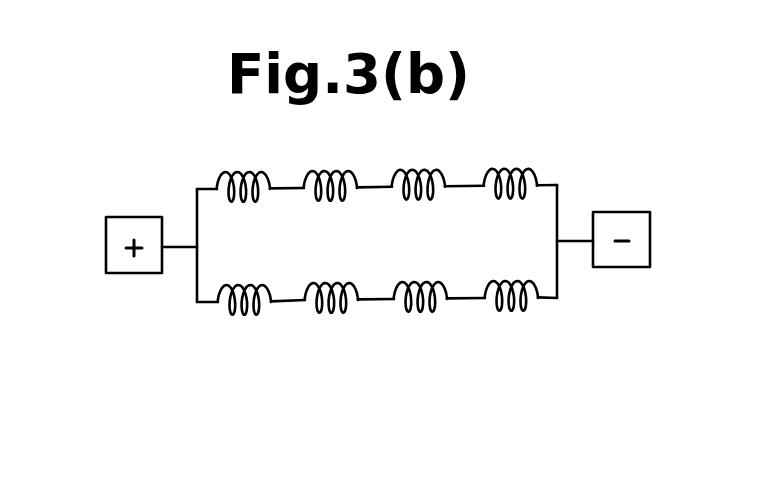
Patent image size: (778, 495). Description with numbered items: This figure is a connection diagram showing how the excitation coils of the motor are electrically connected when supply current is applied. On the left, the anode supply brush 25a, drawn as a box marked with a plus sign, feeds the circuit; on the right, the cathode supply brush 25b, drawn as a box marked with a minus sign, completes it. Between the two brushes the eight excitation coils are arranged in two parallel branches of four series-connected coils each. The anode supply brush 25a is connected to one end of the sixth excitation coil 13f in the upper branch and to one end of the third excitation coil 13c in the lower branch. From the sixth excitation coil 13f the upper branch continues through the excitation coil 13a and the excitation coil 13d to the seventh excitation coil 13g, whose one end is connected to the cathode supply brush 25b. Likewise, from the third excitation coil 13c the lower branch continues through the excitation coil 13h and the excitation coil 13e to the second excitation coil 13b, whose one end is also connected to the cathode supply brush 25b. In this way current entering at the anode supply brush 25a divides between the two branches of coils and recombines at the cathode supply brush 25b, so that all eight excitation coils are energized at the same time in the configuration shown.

The anode supply brush 25a is at (131, 273).
The cathode supply brush 25b is at (618, 267).
The excitation coil 13a is at (331, 202).
The second excitation coil 13b is at (512, 312).
The third excitation coil 13c is at (244, 316).
The excitation coil 13d is at (419, 201).
The excitation coil 13e is at (420, 313).
The sixth excitation coil 13f is at (243, 203).
The seventh excitation coil 13g is at (511, 200).
The excitation coil 13h is at (331, 314).